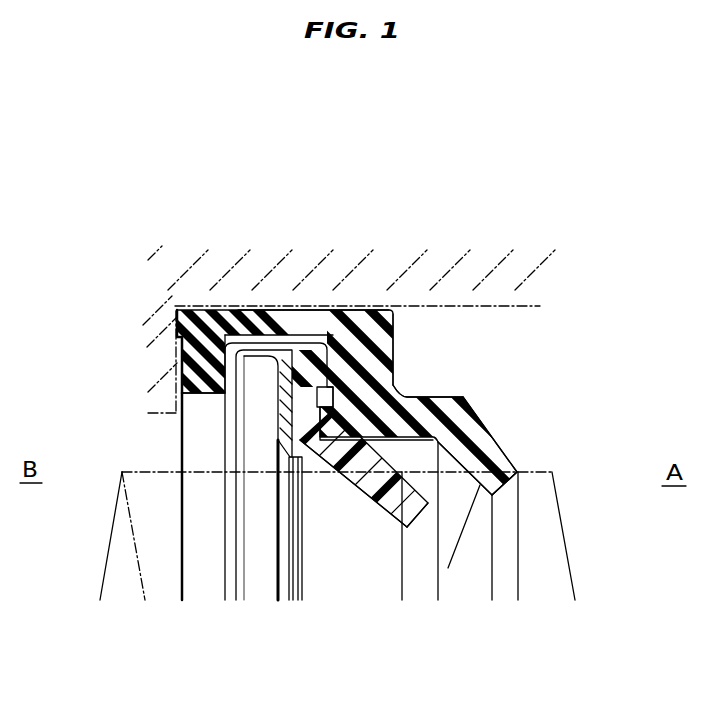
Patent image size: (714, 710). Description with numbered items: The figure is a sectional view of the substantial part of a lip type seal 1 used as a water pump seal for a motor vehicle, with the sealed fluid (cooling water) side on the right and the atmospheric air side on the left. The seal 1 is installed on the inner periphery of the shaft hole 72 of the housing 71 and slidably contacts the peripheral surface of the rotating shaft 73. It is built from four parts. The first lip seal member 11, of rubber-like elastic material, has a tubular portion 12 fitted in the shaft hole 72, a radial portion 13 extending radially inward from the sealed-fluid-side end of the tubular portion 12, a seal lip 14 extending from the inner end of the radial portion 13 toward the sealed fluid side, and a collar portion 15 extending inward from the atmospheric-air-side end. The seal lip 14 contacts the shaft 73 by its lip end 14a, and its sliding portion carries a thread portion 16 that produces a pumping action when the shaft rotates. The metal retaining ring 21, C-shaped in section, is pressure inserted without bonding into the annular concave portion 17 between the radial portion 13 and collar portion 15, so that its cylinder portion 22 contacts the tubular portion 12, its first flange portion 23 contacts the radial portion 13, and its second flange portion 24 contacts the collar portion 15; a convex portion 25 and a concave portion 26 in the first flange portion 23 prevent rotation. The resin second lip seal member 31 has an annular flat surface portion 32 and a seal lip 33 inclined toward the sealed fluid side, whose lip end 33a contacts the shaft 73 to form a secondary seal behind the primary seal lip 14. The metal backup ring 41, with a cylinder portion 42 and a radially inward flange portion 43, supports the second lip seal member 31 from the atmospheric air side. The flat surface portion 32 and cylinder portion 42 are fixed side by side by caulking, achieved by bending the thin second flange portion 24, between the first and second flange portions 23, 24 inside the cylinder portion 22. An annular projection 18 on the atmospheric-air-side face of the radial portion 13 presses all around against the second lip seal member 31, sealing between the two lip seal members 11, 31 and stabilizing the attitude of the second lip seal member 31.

The lip type seal 1 is at (188, 306).
The first lip seal member 11 is at (394, 304).
The tubular portion 12 is at (285, 333).
The radial portion 13 is at (395, 343).
The seal lip 14 is at (450, 413).
The lip end 14a is at (490, 486).
The collar portion 15 is at (220, 365).
The thread portion 16 is at (492, 547).
The annular concave portion 17 is at (263, 333).
The annular projection 18 is at (292, 460).
The retaining ring 21 is at (222, 309).
The cylinder portion 22 is at (312, 335).
The first flange portion 23 is at (360, 352).
The second flange portion 24 is at (200, 355).
The convex portion 25 is at (278, 395).
The concave portion 26 is at (396, 384).
The second lip seal member 31 is at (330, 470).
The flat surface portion 32 is at (323, 343).
The seal lip 33 is at (355, 490).
The lip end 33a is at (405, 520).
The backup ring 41 is at (275, 428).
The cylinder portion 42 is at (253, 305).
The flange portion 43 is at (262, 450).
The housing 71 is at (510, 285).
The shaft hole 72 is at (542, 302).
The shaft 73 is at (523, 548).